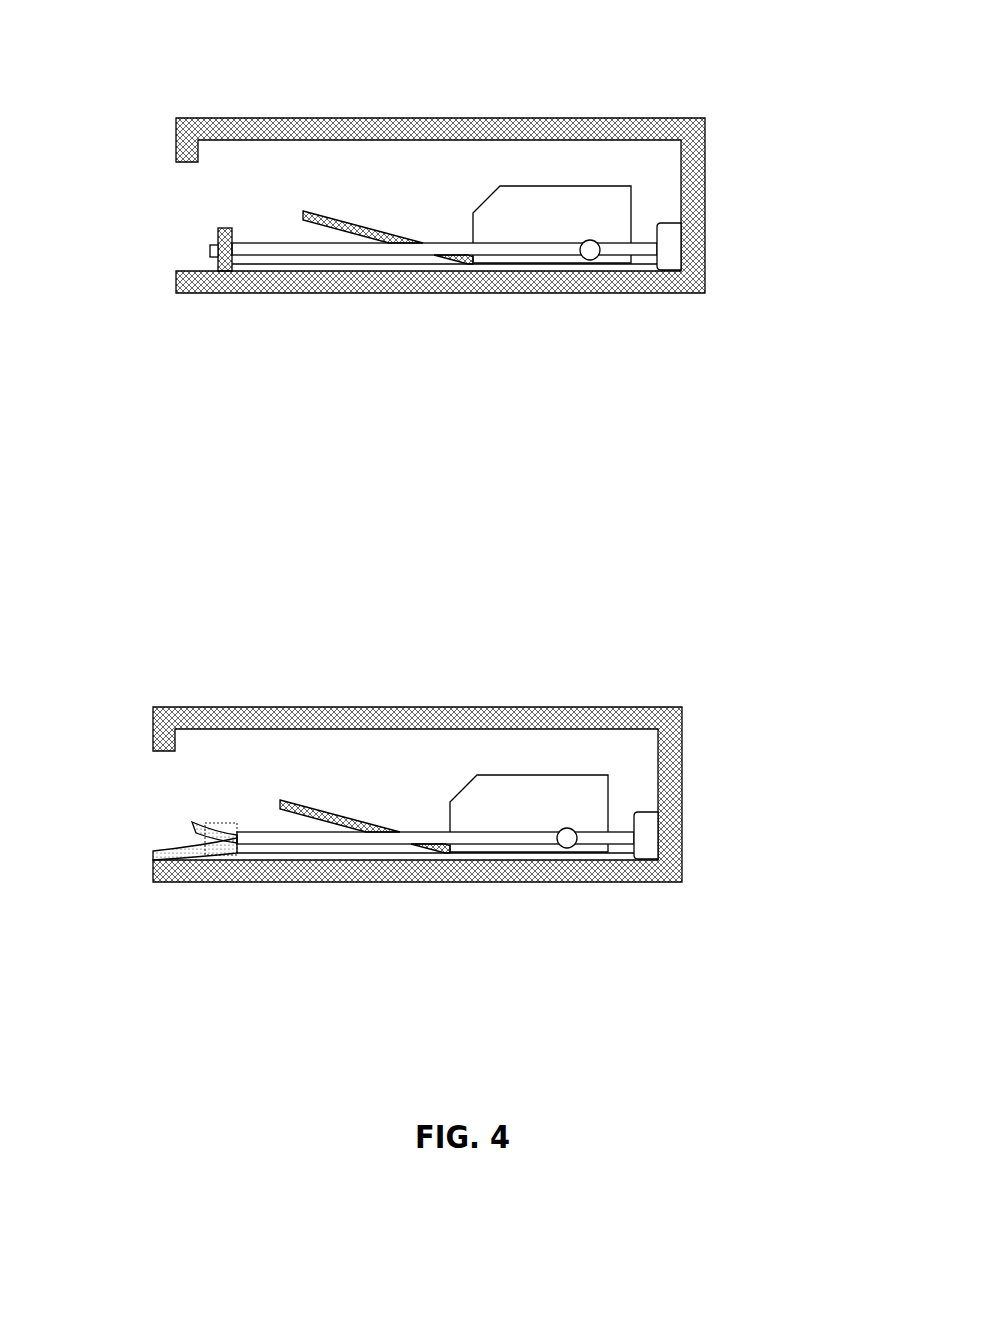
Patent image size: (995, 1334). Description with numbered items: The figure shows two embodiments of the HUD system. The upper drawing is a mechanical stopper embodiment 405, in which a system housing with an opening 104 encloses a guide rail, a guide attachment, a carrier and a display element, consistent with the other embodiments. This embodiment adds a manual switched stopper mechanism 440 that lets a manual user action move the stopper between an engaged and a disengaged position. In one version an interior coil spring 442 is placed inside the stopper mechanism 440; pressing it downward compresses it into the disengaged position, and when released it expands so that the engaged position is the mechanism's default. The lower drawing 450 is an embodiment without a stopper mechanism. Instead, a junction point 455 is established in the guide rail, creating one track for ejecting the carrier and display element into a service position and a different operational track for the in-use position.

The mechanical stopper embodiment 405 is at (452, 201).
The opening 104 is at (187, 182).
The manual switched stopper mechanism 440 is at (217, 272).
The interior coil spring 442 is at (212, 252).
The embodiment without a stopper mechanism 450 is at (482, 780).
The junction point 455 is at (226, 817).